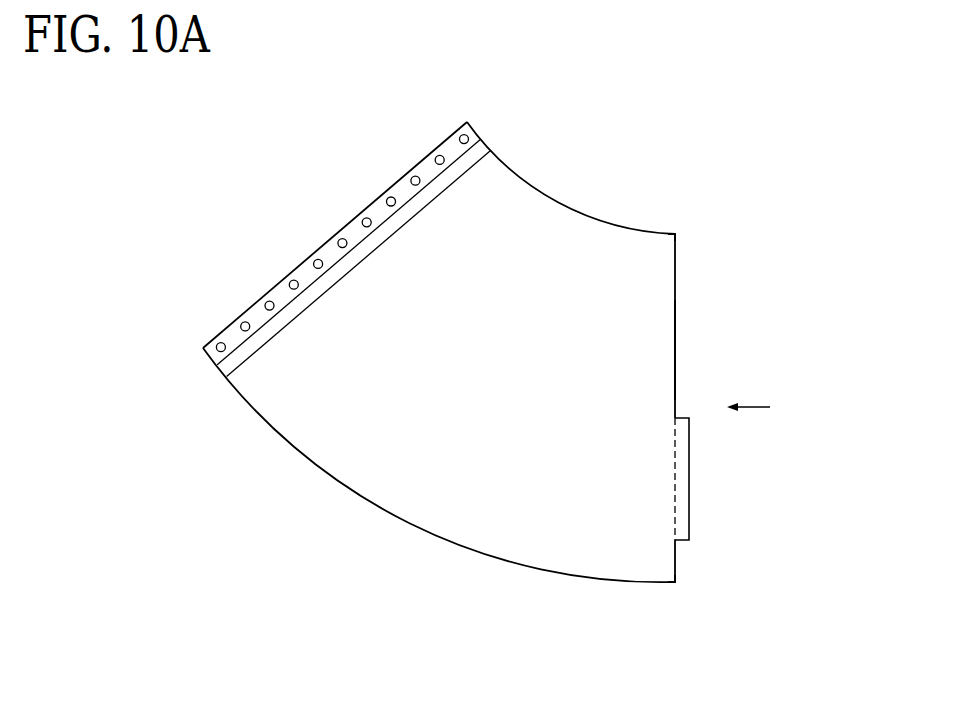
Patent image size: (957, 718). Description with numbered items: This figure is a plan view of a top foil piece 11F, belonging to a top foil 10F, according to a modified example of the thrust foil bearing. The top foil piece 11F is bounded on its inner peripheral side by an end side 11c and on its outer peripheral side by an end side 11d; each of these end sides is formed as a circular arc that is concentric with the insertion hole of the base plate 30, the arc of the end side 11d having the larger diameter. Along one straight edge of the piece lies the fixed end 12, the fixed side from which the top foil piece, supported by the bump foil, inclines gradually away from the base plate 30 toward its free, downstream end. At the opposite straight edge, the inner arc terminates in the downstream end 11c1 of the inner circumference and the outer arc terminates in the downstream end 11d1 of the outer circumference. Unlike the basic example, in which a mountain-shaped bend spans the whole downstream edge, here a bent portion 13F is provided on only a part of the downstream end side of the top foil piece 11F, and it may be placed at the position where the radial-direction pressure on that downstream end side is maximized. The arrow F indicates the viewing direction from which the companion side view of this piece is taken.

The top foil 10F is at (347, 487).
The top foil piece 11F is at (333, 412).
The end side on the inner peripheral side 11c is at (548, 197).
The downstream end of the inner circumference 11c1 is at (665, 232).
The end side on the outer peripheral side 11d is at (427, 533).
The downstream end of the outer circumference 11d1 is at (672, 583).
The fixed end 12 is at (333, 250).
The bent portion 13F is at (690, 492).
The base plate 30 is at (677, 372).
The arrow F is at (757, 406).